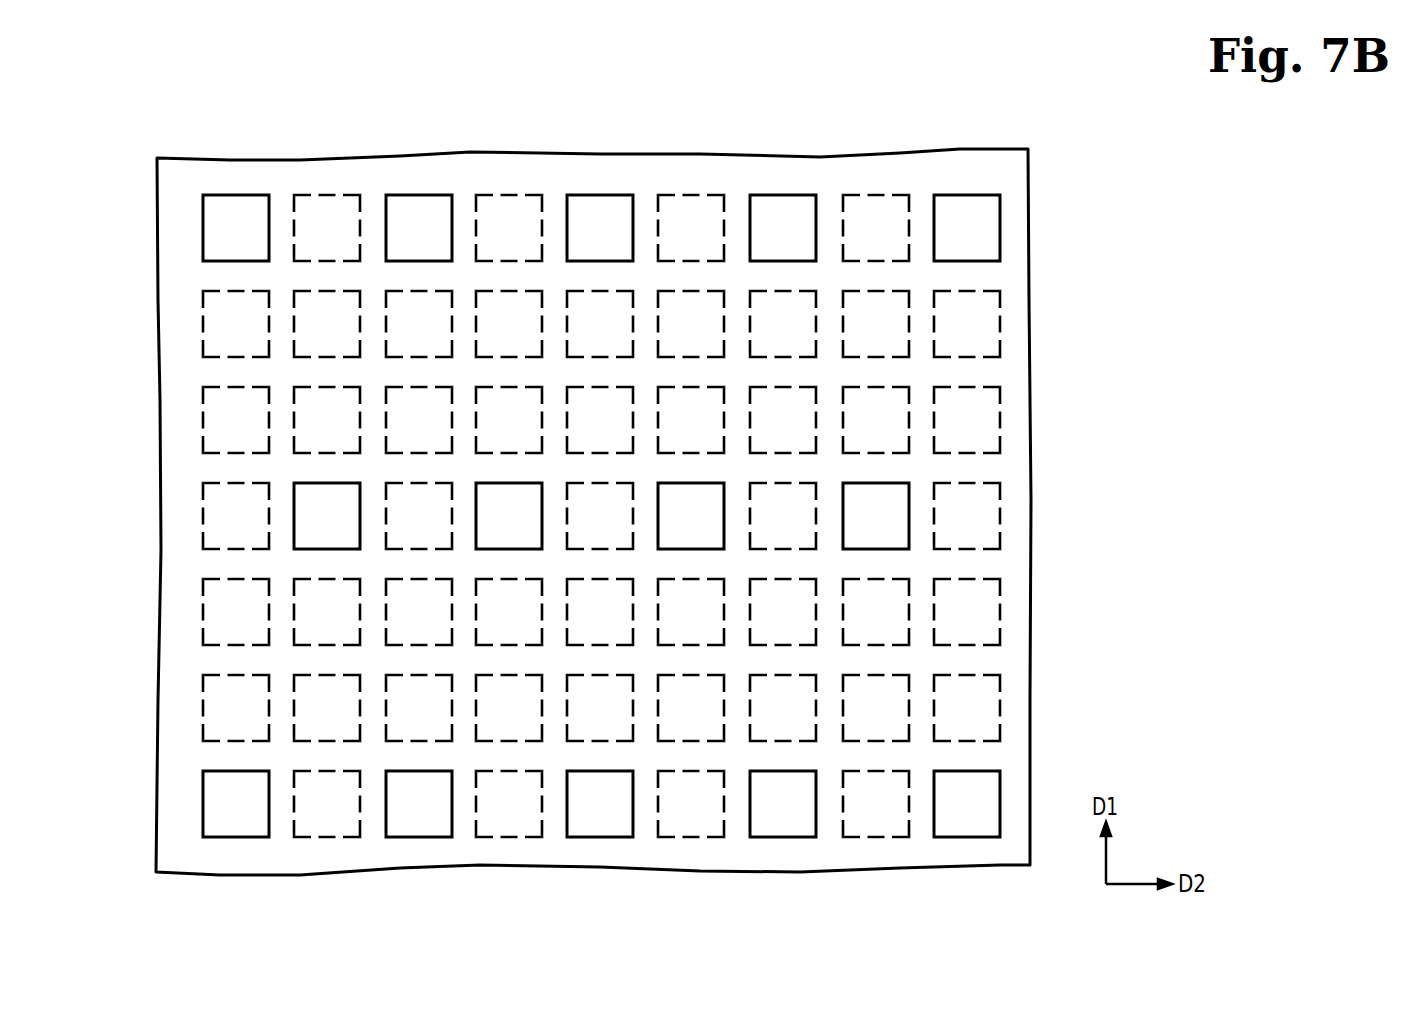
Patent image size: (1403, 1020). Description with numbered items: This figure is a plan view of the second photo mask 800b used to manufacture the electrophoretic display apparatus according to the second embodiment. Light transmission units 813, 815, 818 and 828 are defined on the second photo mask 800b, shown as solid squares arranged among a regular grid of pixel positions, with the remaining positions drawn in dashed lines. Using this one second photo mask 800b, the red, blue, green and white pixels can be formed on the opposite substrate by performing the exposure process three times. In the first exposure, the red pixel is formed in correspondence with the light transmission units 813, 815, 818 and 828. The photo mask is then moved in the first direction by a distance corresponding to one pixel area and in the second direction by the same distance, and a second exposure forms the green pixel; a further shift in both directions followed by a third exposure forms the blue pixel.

The second photo mask 800b is at (905, 106).
The light transmission unit 813 is at (236, 195).
The light transmission unit 815 is at (418, 195).
The light transmission unit 818 is at (335, 482).
The light transmission unit 828 is at (517, 482).